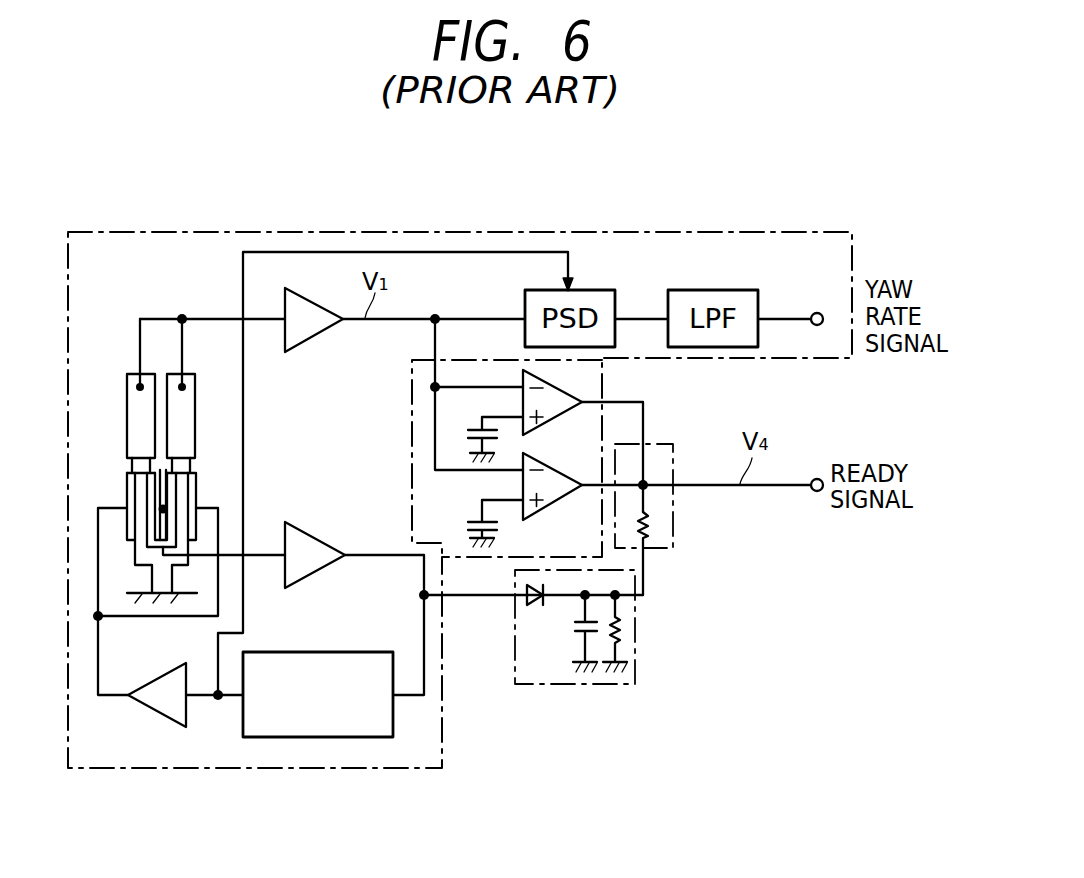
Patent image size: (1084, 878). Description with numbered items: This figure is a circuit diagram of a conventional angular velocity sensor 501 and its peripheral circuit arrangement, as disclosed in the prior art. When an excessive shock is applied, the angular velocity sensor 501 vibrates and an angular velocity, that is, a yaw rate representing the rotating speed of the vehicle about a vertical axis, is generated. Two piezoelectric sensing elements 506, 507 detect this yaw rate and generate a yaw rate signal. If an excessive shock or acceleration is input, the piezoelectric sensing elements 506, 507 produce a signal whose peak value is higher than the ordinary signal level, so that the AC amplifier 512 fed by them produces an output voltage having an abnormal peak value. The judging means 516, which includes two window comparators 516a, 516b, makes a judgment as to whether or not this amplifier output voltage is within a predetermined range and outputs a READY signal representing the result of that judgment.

The angular velocity sensor 501 is at (148, 238).
The piezoelectric sensing element 506 is at (110, 417).
The piezoelectric sensing element 507 is at (211, 417).
The AC amplifier 512 is at (307, 345).
The judging means 516 is at (415, 360).
The window comparator 516a is at (557, 421).
The window comparator 516b is at (557, 505).